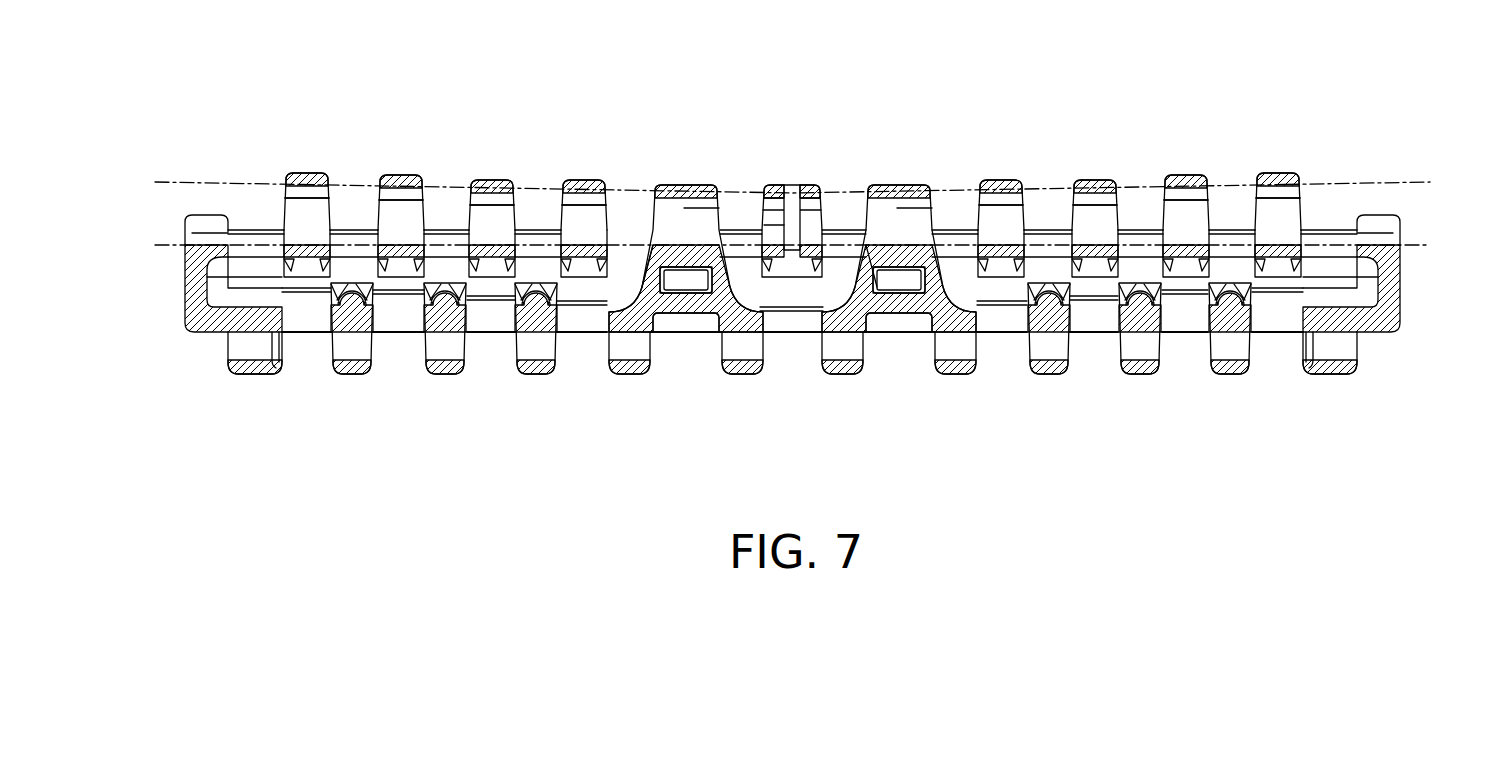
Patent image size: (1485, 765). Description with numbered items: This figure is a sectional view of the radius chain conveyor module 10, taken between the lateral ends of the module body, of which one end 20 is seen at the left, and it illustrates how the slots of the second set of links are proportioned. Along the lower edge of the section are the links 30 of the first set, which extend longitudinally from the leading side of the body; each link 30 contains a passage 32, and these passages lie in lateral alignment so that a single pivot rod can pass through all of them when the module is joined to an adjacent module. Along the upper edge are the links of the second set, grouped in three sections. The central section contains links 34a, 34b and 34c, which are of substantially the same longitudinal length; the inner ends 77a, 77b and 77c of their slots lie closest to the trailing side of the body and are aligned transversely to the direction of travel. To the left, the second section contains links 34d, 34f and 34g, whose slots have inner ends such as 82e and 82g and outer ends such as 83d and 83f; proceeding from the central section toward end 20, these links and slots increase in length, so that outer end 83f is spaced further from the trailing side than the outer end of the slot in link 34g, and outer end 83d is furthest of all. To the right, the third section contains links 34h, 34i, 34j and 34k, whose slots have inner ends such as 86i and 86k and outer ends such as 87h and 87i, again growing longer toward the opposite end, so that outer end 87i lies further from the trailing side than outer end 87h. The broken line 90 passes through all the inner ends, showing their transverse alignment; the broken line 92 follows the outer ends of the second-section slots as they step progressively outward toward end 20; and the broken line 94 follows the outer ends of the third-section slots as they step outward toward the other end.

The radius chain conveyor module 10 is at (178, 269).
The end 20 is at (185, 283).
The links of the first set 30 is at (443, 375).
The passage 32 is at (343, 343).
The link 34a is at (686, 185).
The link 34b is at (792, 185).
The link 34c is at (401, 175).
The link 34d is at (307, 173).
The link 34f is at (492, 180).
The link 34g is at (584, 180).
The link 34h is at (1001, 180).
The link 34i is at (1095, 180).
The link 34j is at (1186, 175).
The link 34k is at (1278, 173).
The inner end 77a is at (678, 247).
The inner end 77b is at (782, 242).
The inner end 77c is at (888, 245).
The inner end 82e is at (407, 243).
The inner end 82g is at (591, 243).
The outer end 83d is at (312, 190).
The outer end 83f is at (499, 192).
The inner end 86i is at (1094, 243).
The inner end 86k is at (1279, 243).
The outer end 87h is at (1003, 243).
The outer end 87i is at (1184, 192).
The broken line 90 is at (160, 245).
The broken line 92 is at (165, 182).
The broken line 94 is at (1377, 182).